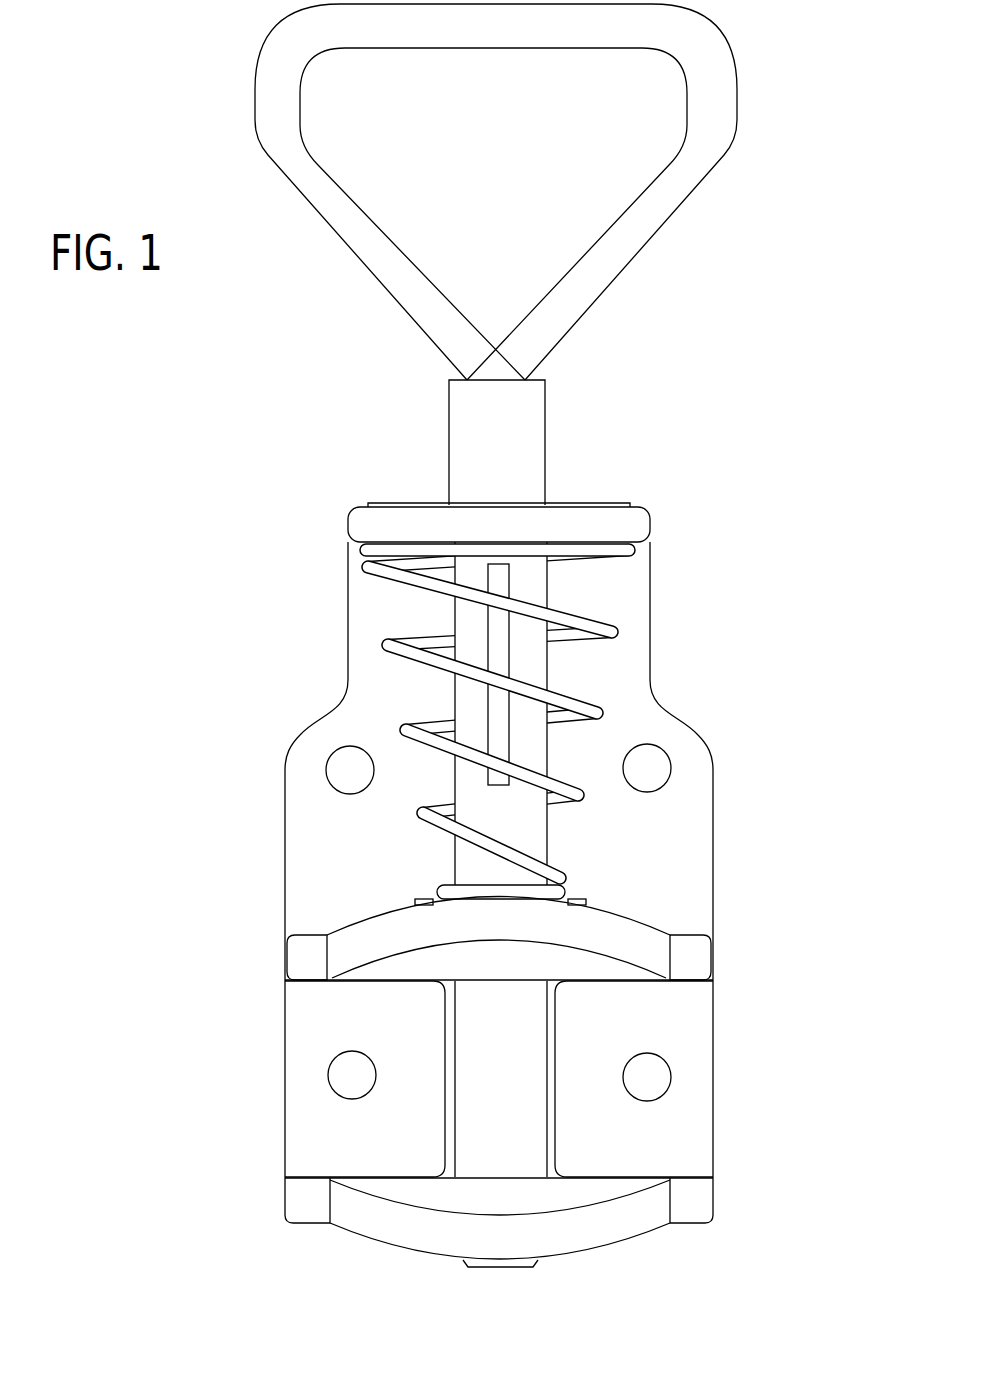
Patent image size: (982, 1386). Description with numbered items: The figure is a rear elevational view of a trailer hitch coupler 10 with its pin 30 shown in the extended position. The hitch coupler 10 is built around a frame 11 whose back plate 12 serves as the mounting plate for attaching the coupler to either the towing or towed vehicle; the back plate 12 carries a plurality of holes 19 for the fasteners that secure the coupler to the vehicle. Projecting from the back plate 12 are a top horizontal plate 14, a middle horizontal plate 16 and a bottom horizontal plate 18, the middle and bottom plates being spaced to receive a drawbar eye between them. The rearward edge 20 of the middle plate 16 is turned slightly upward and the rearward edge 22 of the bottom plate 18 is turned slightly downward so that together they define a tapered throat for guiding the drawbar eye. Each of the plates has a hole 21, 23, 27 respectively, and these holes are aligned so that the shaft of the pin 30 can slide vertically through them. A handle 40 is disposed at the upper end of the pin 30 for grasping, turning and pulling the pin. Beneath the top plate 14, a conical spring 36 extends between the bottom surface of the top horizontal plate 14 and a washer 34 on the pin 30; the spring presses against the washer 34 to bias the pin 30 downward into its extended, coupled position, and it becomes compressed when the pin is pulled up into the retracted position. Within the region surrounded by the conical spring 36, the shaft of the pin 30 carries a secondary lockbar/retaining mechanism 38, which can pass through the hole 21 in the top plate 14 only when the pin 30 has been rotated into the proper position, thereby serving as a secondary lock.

The hitch coupler 10 is at (275, 458).
The frame 11 is at (293, 736).
The back plate 12 is at (705, 818).
The top horizontal plate 14 is at (630, 516).
The middle horizontal plate 16 is at (700, 947).
The bottom horizontal plate 18 is at (703, 1205).
The holes 19 is at (663, 748).
The rearward edge of the middle plate 20 is at (410, 933).
The hole 21 is at (447, 504).
The rearward edge of the bottom plate 22 is at (457, 1232).
The hole 23 is at (447, 983).
The hole 27 is at (557, 1172).
The pin 30 is at (532, 431).
The washer 34 is at (413, 898).
The conical spring 36 is at (617, 631).
The secondary lockbar/retaining mechanism 38 is at (497, 617).
The handle 40 is at (727, 107).